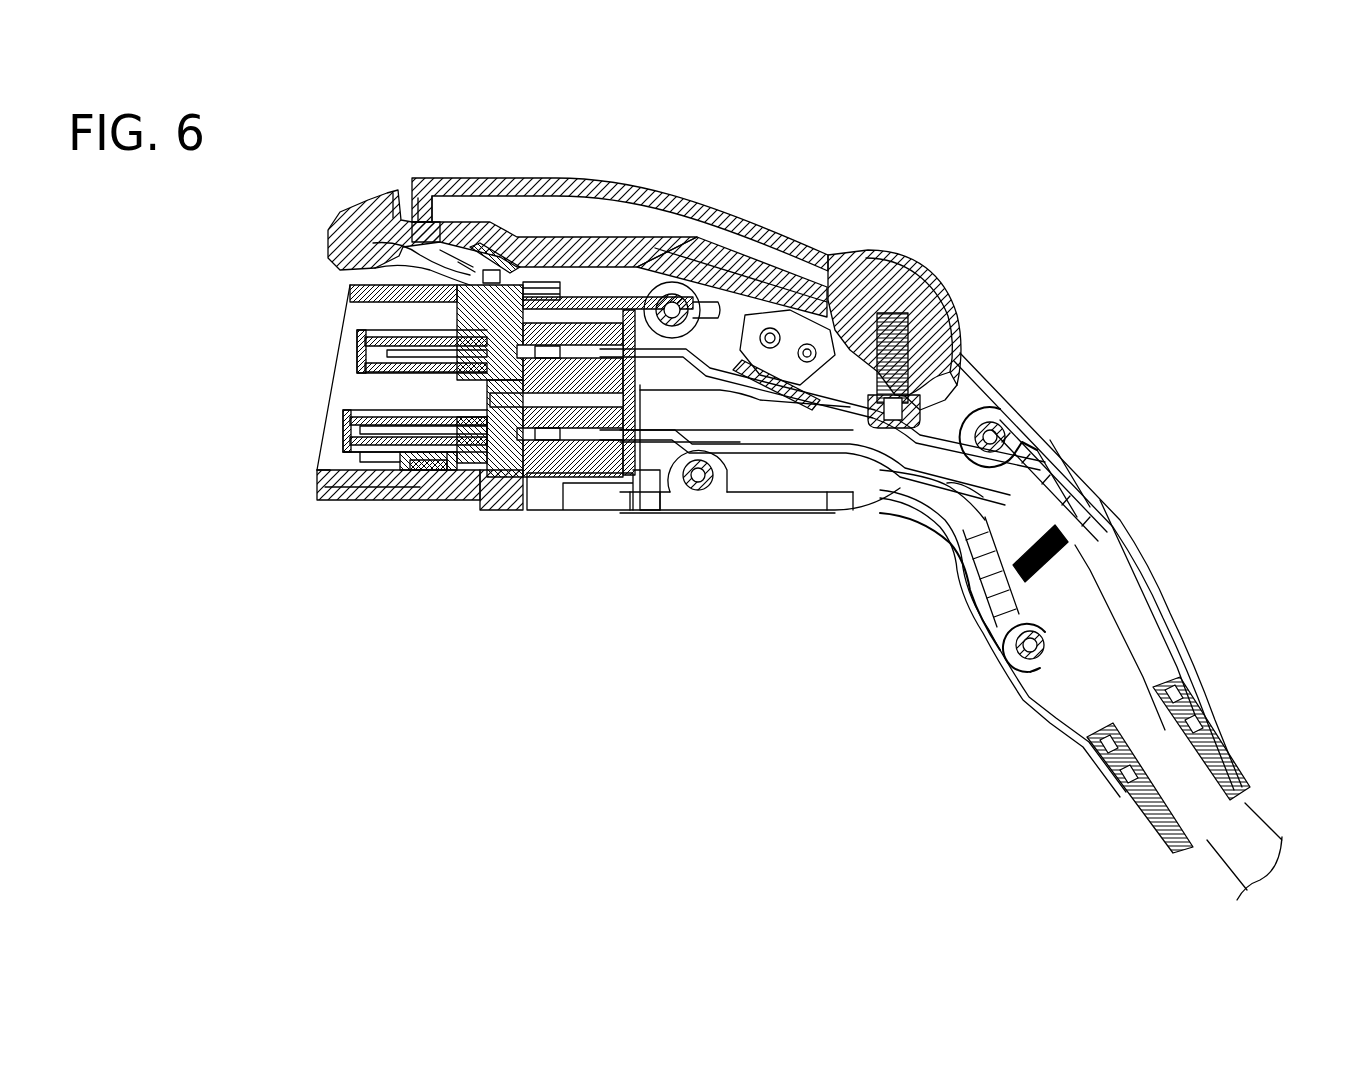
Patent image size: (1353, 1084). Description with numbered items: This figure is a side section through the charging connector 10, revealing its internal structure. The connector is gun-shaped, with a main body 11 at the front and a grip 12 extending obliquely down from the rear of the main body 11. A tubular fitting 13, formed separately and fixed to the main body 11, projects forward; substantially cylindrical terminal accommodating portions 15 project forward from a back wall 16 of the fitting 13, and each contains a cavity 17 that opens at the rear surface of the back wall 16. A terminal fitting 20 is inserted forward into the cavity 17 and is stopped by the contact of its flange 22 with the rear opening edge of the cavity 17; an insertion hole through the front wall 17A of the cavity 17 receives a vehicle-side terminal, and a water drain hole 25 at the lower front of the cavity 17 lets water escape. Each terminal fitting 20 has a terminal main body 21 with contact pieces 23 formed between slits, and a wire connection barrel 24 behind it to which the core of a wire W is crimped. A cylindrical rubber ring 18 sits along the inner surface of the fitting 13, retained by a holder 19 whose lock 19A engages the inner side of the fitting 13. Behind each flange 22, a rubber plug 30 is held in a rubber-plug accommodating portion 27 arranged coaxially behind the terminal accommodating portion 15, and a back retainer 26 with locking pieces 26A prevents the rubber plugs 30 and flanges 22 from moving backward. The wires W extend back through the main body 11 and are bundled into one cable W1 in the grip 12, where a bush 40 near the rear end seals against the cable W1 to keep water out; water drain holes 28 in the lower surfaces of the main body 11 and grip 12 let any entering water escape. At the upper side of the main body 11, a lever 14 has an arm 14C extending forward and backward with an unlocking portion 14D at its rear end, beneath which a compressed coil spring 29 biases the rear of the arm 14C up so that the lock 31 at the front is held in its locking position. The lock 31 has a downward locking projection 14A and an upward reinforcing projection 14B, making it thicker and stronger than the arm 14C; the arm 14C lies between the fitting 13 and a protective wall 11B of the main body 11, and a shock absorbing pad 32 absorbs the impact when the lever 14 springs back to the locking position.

The charging connector 10 is at (856, 178).
The main body 11 is at (787, 230).
The protective wall 11B is at (443, 174).
The grip 12 is at (1166, 542).
The fitting 13 is at (441, 470).
The lever 14 is at (486, 203).
The locking projection 14A is at (350, 267).
The reinforcing projection 14B is at (397, 193).
The arm 14C is at (610, 237).
The unlocking portion 14D is at (890, 273).
The terminal accommodating portion 15 is at (363, 333).
The back wall 16 is at (417, 397).
The cavity 17 is at (387, 470).
The front wall 17A is at (357, 428).
The rubber ring 18 is at (417, 480).
The holder 19 is at (340, 480).
The lock 19A is at (340, 222).
The terminal fitting 20 is at (457, 470).
The terminal main body 21 is at (462, 470).
The flange 22 is at (505, 470).
The contact pieces 23 is at (350, 452).
The wire connection barrel 24 is at (540, 440).
The water drain hole 25 is at (330, 478).
The back retainer 26 is at (657, 410).
The locking pieces 26A is at (568, 293).
The rubber-plug accommodating portion 27 is at (597, 470).
The water drain holes 28 is at (640, 500).
The coil spring 29 is at (882, 356).
The rubber plug 30 is at (614, 470).
The lock 31 is at (363, 213).
The shock absorbing pad 32 is at (488, 252).
The bush 40 is at (1230, 750).
The wire W is at (632, 340).
The cable W1 is at (1100, 647).